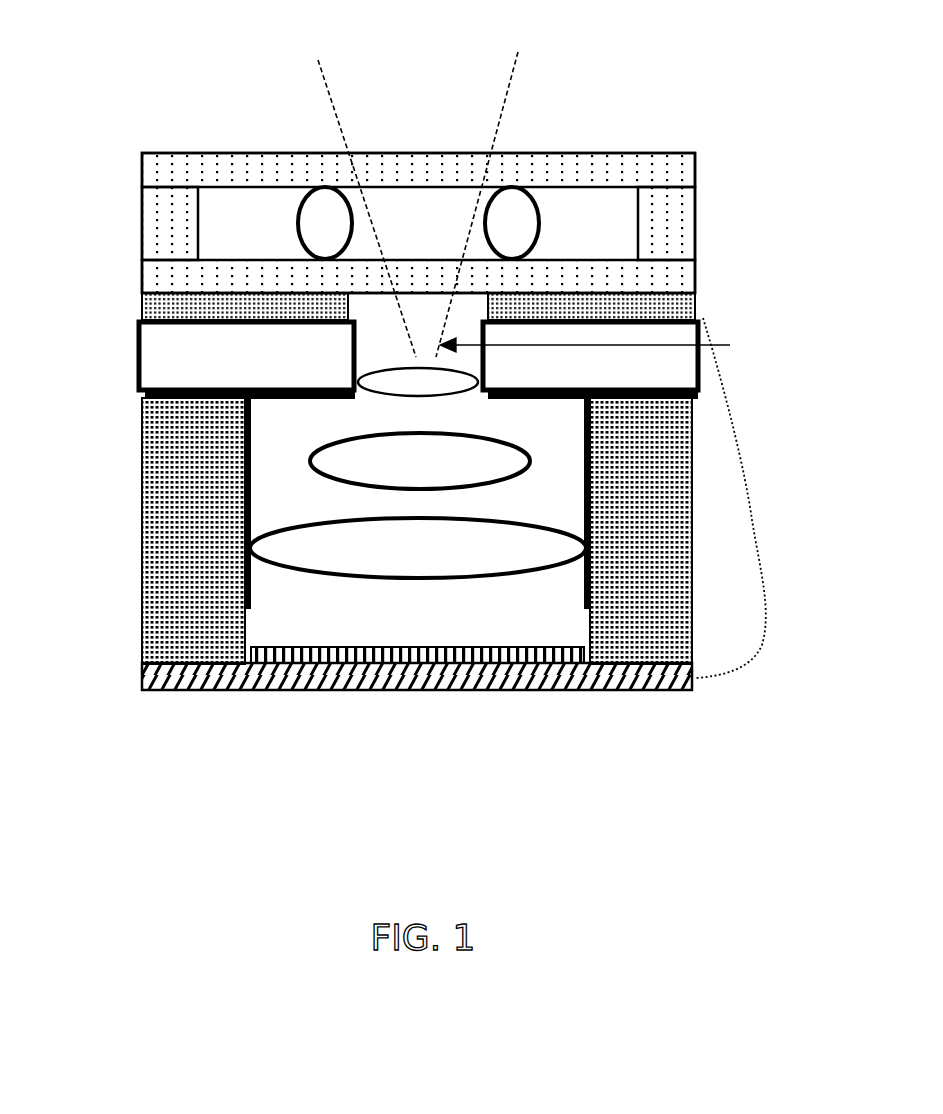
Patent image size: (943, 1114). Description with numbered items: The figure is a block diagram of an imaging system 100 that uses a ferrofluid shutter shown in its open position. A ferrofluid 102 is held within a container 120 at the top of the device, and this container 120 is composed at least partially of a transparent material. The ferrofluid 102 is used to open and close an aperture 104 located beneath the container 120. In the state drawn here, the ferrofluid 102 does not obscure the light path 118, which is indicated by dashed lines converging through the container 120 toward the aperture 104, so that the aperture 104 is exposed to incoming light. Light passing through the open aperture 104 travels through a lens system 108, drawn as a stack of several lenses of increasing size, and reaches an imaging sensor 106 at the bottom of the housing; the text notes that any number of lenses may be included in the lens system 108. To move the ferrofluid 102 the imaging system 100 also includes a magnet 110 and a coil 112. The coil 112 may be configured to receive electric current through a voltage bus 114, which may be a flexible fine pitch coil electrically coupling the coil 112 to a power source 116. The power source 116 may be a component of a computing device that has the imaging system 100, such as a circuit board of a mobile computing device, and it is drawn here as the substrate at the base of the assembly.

The imaging system 100 is at (406, 903).
The ferrofluid 102 is at (356, 188).
The aperture 104 is at (608, 346).
The imaging sensor 106 is at (336, 663).
The lens system 108 is at (372, 398).
The magnet 110 is at (140, 345).
The coil 112 is at (697, 310).
The voltage bus 114 is at (752, 535).
The power source 116 is at (178, 690).
The light path 118 is at (508, 97).
The container 120 is at (706, 208).